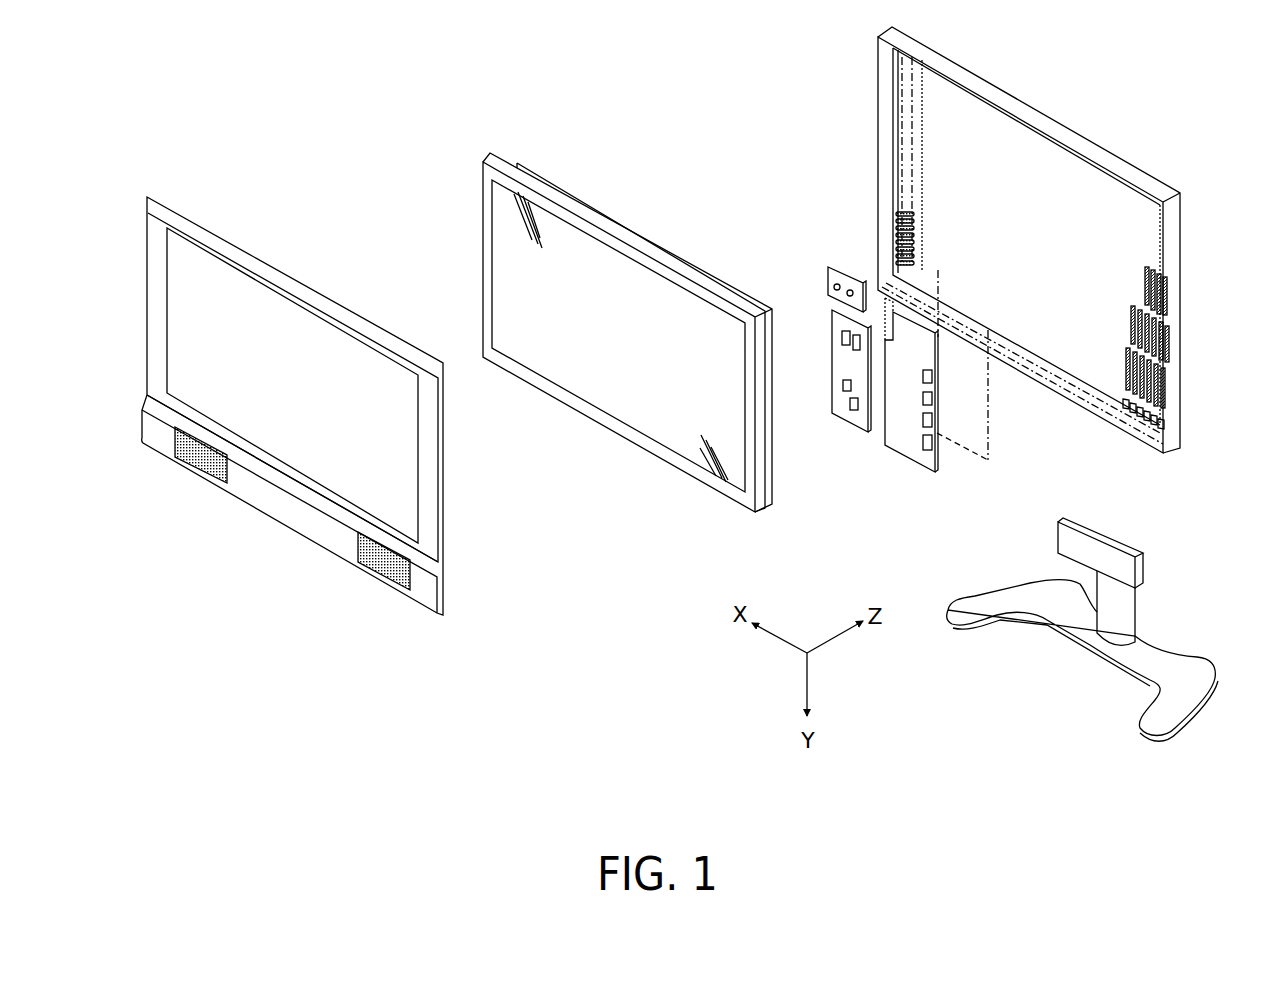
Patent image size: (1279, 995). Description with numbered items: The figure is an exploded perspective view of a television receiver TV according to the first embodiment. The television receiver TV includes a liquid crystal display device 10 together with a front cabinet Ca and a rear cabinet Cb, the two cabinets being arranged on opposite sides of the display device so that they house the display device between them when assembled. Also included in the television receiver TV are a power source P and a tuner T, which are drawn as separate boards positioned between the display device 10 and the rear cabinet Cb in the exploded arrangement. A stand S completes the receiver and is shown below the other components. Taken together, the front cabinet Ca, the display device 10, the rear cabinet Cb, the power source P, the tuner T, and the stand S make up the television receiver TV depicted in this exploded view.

The television receiver TV is at (645, 100).
The front cabinet Ca is at (281, 270).
The liquid crystal display device 10 is at (580, 197).
The rear cabinet Cb is at (1022, 102).
The tuner T is at (844, 420).
The power source P is at (903, 457).
The stand S is at (1003, 620).